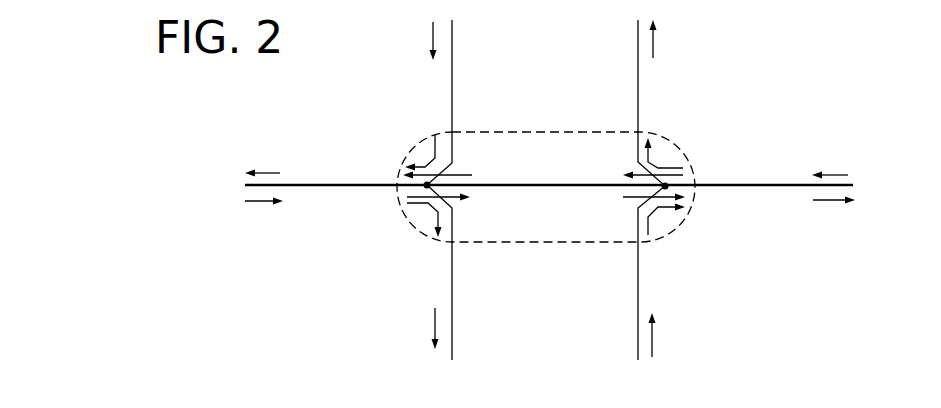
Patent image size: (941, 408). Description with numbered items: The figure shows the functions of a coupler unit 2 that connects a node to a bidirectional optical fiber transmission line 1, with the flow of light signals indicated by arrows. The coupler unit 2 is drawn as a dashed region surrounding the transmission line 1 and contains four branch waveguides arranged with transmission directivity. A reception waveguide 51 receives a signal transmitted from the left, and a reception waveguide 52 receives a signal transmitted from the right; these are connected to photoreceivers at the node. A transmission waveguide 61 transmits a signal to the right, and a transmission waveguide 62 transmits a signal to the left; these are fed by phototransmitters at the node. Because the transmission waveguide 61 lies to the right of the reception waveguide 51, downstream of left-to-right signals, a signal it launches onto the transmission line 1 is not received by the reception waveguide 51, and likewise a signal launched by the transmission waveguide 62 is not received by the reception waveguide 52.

The transmission line 1 is at (245, 185).
The coupler unit 2 is at (540, 131).
The reception waveguide 51 is at (453, 347).
The reception waveguide 52 is at (637, 38).
The transmission waveguide 61 is at (637, 347).
The transmission waveguide 62 is at (453, 30).